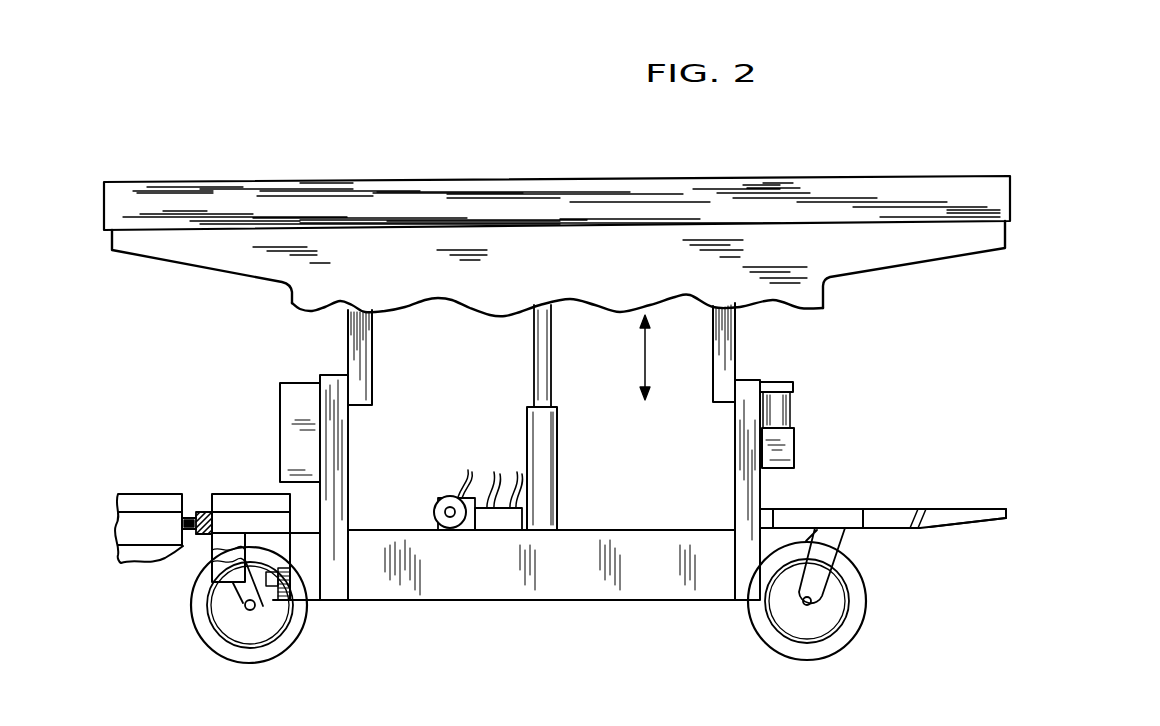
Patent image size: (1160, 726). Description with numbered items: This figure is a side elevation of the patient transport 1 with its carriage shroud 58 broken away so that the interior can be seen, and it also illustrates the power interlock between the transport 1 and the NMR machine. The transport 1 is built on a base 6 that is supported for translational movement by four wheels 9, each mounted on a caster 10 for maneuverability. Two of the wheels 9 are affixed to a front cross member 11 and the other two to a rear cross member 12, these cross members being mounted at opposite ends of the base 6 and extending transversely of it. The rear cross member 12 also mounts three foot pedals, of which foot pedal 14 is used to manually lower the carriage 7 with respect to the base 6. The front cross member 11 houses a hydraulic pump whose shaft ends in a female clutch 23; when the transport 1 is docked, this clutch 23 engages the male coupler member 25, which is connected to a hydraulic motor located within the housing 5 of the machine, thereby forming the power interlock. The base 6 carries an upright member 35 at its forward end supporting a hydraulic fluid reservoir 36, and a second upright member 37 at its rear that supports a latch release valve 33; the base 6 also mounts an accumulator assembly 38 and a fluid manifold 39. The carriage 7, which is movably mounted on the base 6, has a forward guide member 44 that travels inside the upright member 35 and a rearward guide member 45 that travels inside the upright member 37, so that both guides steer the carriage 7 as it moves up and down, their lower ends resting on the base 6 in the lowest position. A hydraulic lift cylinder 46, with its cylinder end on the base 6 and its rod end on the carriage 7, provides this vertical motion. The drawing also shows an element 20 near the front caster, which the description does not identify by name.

The transport 1 is at (410, 166).
The carriage shroud 58 is at (401, 243).
The carriage 7 is at (208, 276).
The forward guide member 44 is at (372, 368).
The rearward guide member 45 is at (735, 345).
The hydraulic lift cylinder 46 is at (557, 436).
The hydraulic fluid reservoir 36 is at (285, 390).
The upright member 35 is at (350, 437).
The second upright member 37 is at (755, 488).
The latch release valve 33 is at (792, 406).
The housing 5 is at (134, 494).
The male coupler member 25 is at (190, 514).
The female clutch 23 is at (206, 511).
The front cross member 11 is at (262, 494).
The caster bracket 20 is at (225, 563).
The base 6 is at (484, 608).
The accumulator assembly 38 is at (435, 508).
The fluid manifold 39 is at (505, 517).
The rear cross member 12 is at (842, 508).
The foot pedal 14 is at (958, 521).
The wheels 9 is at (198, 584).
The casters 10 is at (198, 612).